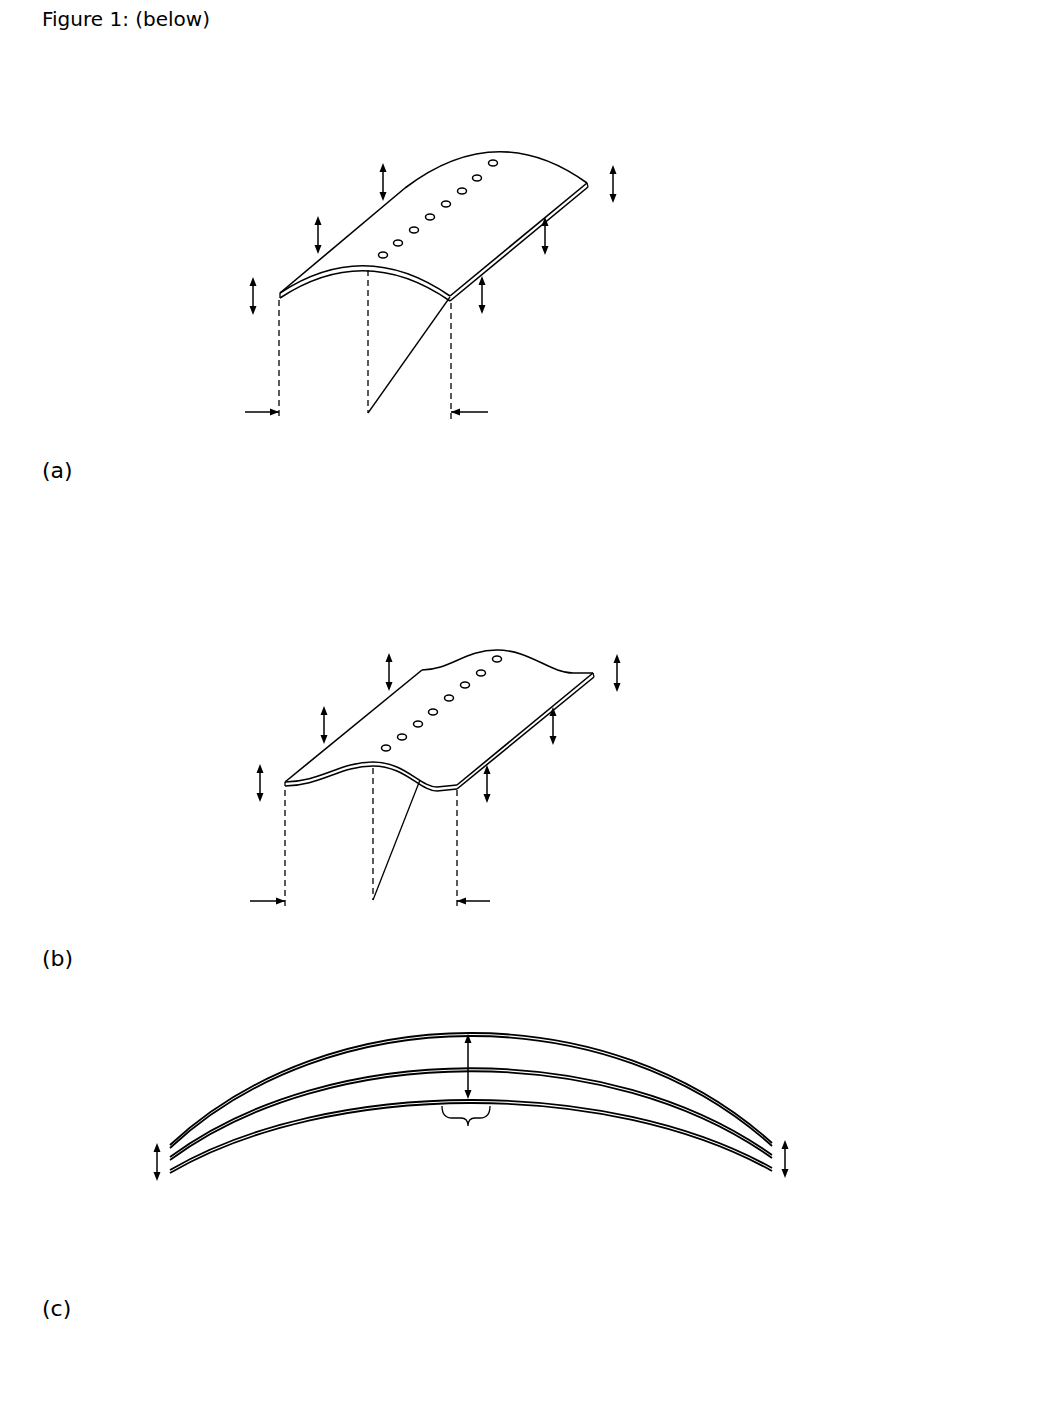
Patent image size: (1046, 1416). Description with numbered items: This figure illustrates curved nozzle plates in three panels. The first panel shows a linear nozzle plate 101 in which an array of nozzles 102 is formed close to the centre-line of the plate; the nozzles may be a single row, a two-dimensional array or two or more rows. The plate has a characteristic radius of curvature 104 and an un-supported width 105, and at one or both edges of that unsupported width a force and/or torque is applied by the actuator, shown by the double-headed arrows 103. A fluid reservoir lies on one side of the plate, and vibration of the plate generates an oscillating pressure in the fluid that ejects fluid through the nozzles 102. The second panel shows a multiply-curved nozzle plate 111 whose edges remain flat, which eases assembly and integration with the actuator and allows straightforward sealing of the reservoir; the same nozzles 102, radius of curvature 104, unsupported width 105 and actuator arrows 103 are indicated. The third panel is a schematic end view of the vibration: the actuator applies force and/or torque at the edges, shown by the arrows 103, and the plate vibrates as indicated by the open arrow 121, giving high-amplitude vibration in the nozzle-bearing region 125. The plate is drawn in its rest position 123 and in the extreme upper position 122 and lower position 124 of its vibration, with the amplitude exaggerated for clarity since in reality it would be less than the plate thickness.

The linear nozzle plate 101 is at (542, 170).
The array of nozzles 102 is at (493, 158).
The double-headed arrows 103 is at (365, 182).
The radius of curvature 104 is at (368, 357).
The un-supported width 105 is at (404, 611).
The multiply-curved nozzle plate 111 is at (547, 670).
The open arrow 121 is at (473, 1080).
The extreme upper position 122 is at (352, 1053).
The rest position 123 is at (380, 1078).
The extreme lower position 124 is at (408, 1105).
The nozzle-bearing region 125 is at (468, 1128).